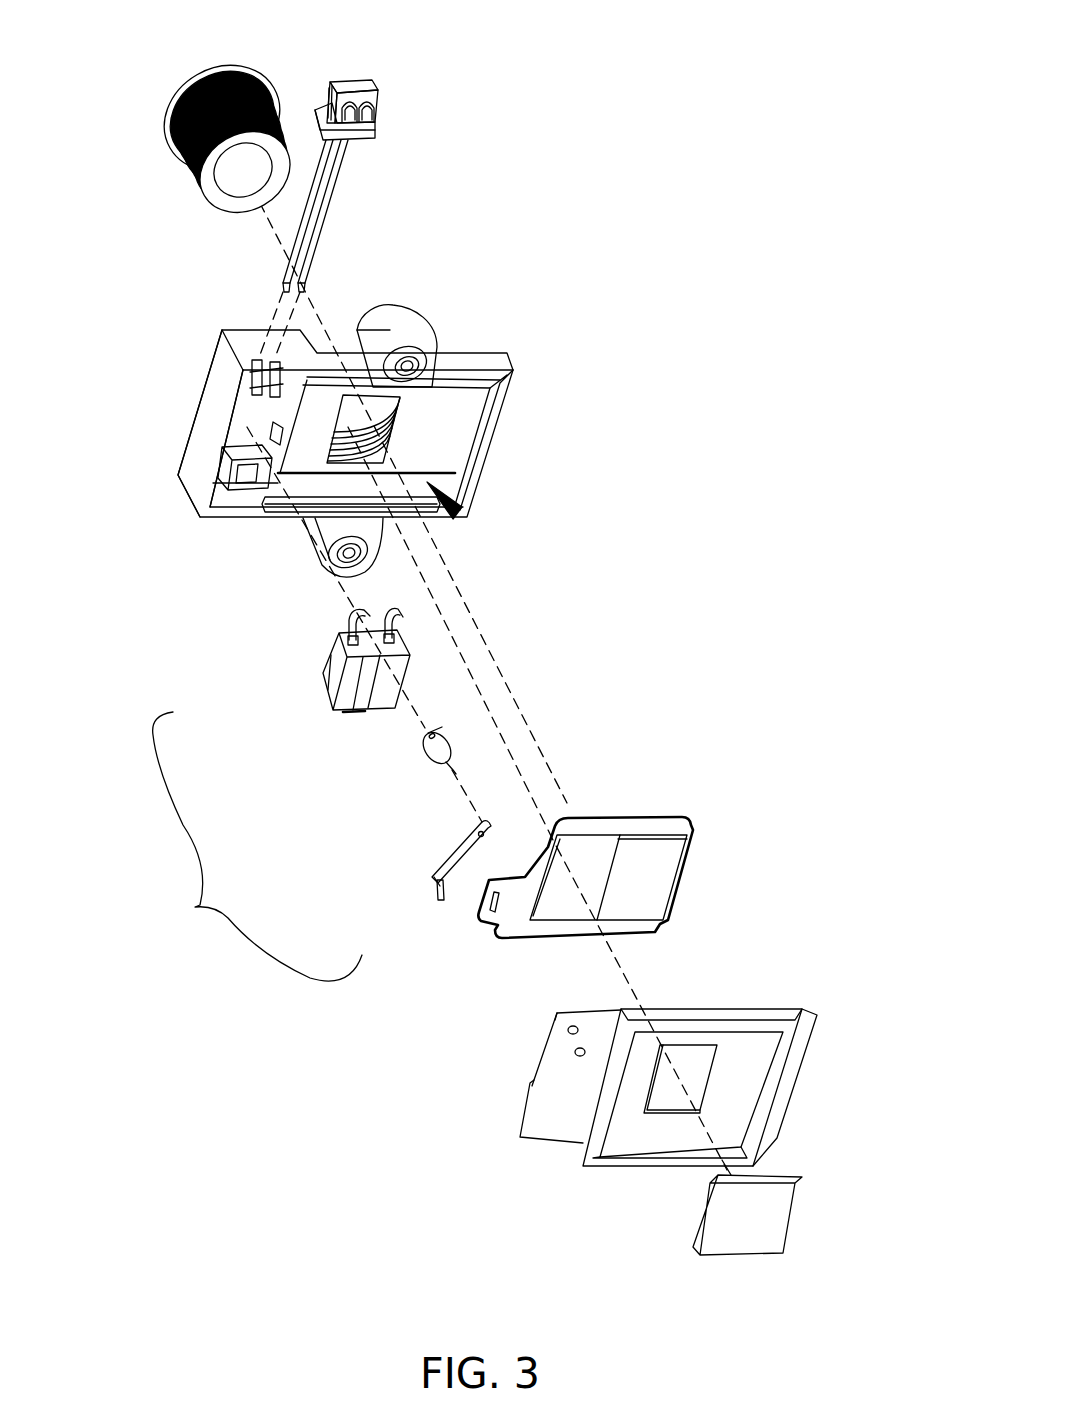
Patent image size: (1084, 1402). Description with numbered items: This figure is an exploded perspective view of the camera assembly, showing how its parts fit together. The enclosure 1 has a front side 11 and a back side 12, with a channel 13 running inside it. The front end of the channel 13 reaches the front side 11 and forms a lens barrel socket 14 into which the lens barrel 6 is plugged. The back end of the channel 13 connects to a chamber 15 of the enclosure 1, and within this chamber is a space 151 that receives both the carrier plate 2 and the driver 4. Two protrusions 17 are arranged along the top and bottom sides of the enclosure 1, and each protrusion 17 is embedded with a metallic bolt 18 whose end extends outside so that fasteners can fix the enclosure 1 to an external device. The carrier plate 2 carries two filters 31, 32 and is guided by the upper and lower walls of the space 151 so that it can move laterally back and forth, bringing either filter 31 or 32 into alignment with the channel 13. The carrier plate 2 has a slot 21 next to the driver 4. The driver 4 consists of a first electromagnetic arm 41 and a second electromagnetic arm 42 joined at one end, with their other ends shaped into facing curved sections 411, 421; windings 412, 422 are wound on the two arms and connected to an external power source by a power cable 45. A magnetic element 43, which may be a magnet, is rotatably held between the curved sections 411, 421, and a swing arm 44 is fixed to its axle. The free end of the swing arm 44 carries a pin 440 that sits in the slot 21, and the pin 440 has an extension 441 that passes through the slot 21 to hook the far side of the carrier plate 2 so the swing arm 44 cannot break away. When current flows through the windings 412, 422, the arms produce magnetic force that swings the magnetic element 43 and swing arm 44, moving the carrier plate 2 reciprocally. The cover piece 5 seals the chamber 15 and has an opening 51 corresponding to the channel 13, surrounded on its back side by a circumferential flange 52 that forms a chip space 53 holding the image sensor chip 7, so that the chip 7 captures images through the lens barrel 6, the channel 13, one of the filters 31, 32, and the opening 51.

The enclosure 1 is at (348, 459).
The front side 11 is at (203, 410).
The back side 12 is at (230, 512).
The channel 13 is at (375, 413).
The lens barrel socket 14 is at (357, 413).
The chamber 15 is at (457, 515).
The space 151 is at (443, 447).
The protrusion 17 is at (390, 320).
The metallic bolt 18 is at (423, 360).
The carrier plate 2 is at (606, 892).
The slot 21 is at (493, 930).
The filter 31 is at (580, 867).
The filter 32 is at (643, 873).
The driver 4 is at (257, 846).
The first electromagnetic arm 41 is at (337, 707).
The curved section 411 is at (363, 612).
The winding 412 is at (333, 680).
The second electromagnetic arm 42 is at (388, 693).
The curved section 421 is at (370, 610).
The winding 422 is at (390, 707).
The magnetic element 43 is at (428, 747).
The swing arm 44 is at (450, 853).
The pin 440 is at (460, 880).
The extension 441 is at (435, 900).
The power cable 45 is at (335, 185).
The cover piece 5 is at (699, 1051).
The opening 51 is at (700, 1055).
The circumferential flange 52 is at (765, 1027).
The chip space 53 is at (728, 1103).
The lens barrel 6 is at (238, 80).
The image sensor chip 7 is at (768, 1222).